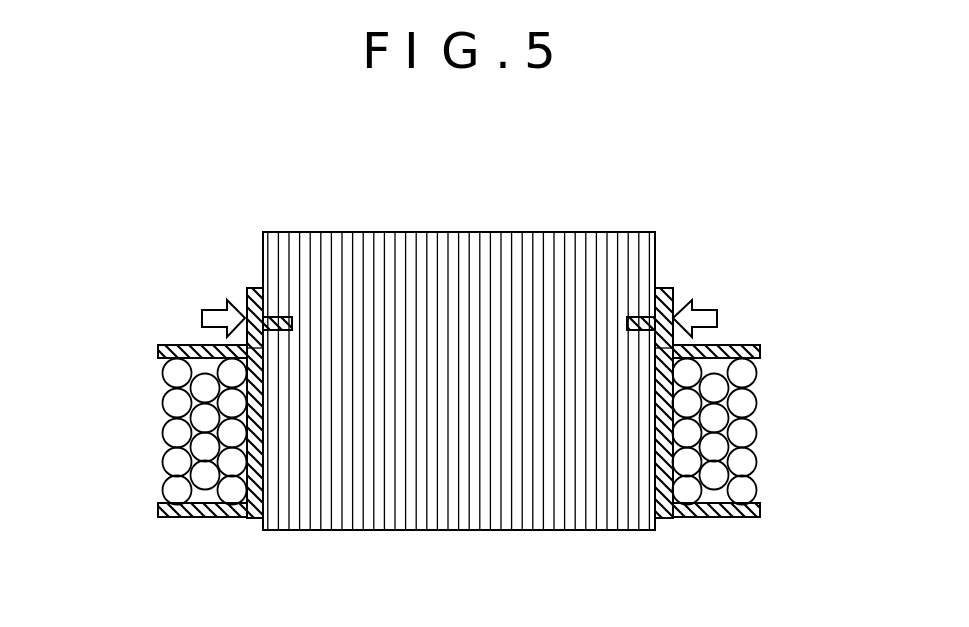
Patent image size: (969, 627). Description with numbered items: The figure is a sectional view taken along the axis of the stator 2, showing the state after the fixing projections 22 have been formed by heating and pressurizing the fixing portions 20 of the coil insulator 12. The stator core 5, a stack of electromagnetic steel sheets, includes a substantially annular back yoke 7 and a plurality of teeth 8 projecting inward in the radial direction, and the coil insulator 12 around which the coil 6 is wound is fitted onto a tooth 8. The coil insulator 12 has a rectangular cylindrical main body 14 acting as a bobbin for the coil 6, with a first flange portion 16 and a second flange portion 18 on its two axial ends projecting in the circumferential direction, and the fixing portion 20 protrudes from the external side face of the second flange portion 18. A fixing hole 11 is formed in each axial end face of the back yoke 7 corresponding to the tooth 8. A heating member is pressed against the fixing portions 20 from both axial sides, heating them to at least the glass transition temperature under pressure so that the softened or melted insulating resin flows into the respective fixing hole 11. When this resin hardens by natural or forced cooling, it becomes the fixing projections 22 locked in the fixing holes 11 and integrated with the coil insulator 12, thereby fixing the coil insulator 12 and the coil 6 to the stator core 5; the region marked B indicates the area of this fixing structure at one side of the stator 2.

The stator 2 is at (628, 184).
The stator core 5 is at (509, 230).
The coil 6 is at (162, 428).
The back yoke 7 is at (260, 287).
The teeth 8 is at (445, 531).
The fixing hole 11 is at (294, 322).
The coil insulator 12 is at (250, 286).
The main body 14 is at (263, 445).
The first flange portion 16 is at (158, 512).
The second flange portion 18 is at (158, 349).
The fixing portion 20 is at (245, 292).
The fixing projection 22 is at (278, 317).
The region B is at (216, 268).